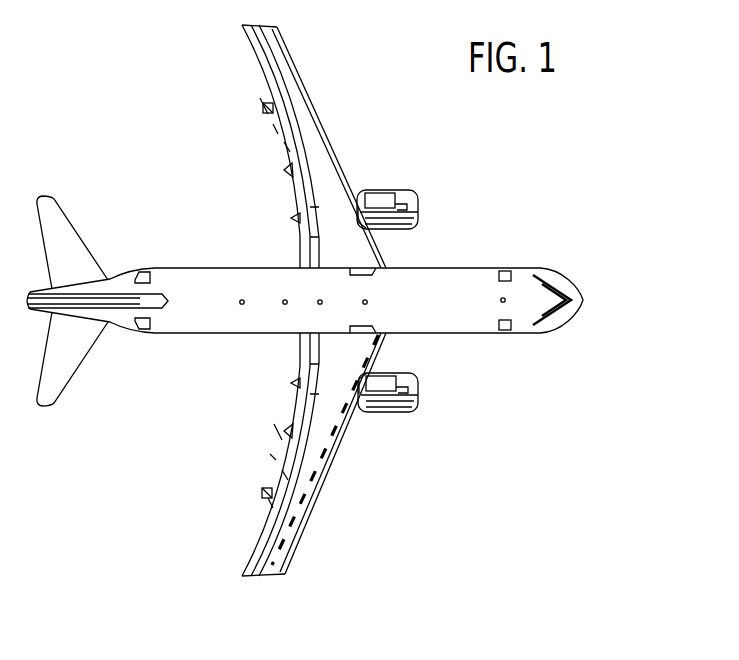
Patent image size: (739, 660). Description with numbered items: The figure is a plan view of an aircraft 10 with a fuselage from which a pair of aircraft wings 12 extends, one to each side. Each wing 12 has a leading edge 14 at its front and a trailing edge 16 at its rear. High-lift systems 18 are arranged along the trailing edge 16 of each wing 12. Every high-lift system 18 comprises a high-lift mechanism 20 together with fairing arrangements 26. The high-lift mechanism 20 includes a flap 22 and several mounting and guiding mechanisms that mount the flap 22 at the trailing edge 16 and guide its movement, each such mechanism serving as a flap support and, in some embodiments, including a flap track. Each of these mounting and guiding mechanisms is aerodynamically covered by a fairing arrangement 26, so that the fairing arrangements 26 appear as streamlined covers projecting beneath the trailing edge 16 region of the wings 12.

The aircraft 10 is at (161, 170).
The aircraft wing 12 is at (323, 180).
The leading edge 14 is at (340, 466).
The trailing edge 16 is at (270, 459).
The high-lift system 18 is at (274, 128).
The high-lift mechanism 20 is at (257, 106).
The flap 22 is at (284, 145).
The fairing arrangement 26 is at (263, 108).